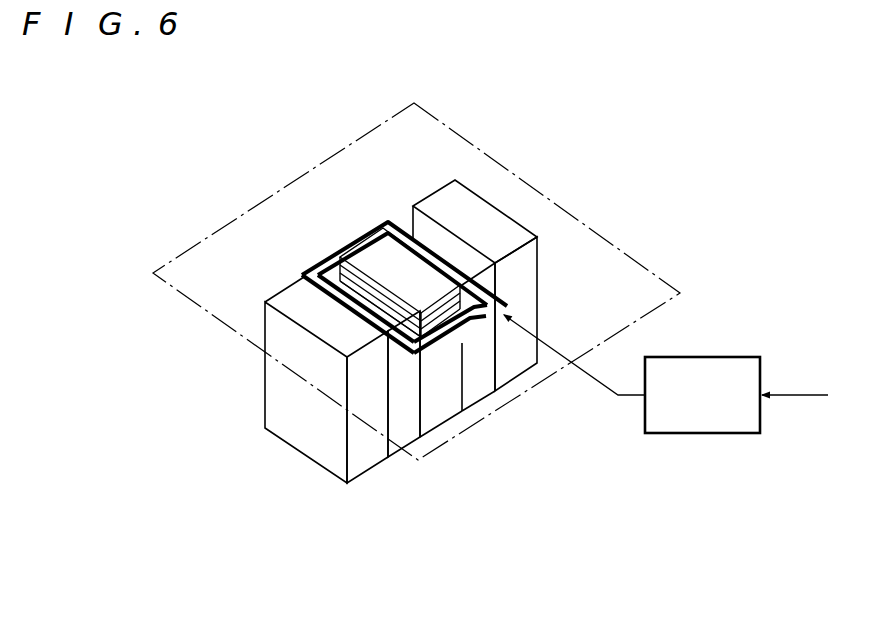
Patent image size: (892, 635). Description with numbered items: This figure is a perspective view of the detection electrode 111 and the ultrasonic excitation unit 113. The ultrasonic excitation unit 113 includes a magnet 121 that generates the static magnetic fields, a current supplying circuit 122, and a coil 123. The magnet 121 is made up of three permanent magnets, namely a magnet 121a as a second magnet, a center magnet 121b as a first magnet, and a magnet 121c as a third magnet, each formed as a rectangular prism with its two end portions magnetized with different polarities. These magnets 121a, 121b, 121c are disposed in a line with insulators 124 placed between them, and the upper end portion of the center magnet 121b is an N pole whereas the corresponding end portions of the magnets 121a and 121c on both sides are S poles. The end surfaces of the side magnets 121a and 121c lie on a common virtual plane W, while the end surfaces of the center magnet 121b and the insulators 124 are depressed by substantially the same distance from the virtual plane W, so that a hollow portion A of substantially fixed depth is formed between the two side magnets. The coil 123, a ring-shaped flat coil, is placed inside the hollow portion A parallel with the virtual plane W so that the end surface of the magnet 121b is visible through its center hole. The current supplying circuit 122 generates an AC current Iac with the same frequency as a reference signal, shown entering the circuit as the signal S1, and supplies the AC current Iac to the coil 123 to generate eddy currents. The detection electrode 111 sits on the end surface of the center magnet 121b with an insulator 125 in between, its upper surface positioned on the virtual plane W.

The ultrasonic excitation unit 113 is at (600, 111).
The detection electrode 111 is at (363, 255).
The magnet 121 is at (409, 386).
The second magnet 121a is at (360, 477).
The first magnet 121b is at (445, 424).
The third magnet 121c is at (523, 367).
The current supplying circuit 122 is at (712, 357).
The coil 123 is at (387, 221).
The insulators 124 is at (413, 444).
The insulator 125 is at (363, 285).
The virtual plane W is at (616, 249).
The hollow portion A is at (424, 228).
The control signal S1 is at (810, 390).
The AC current Iac is at (606, 392).